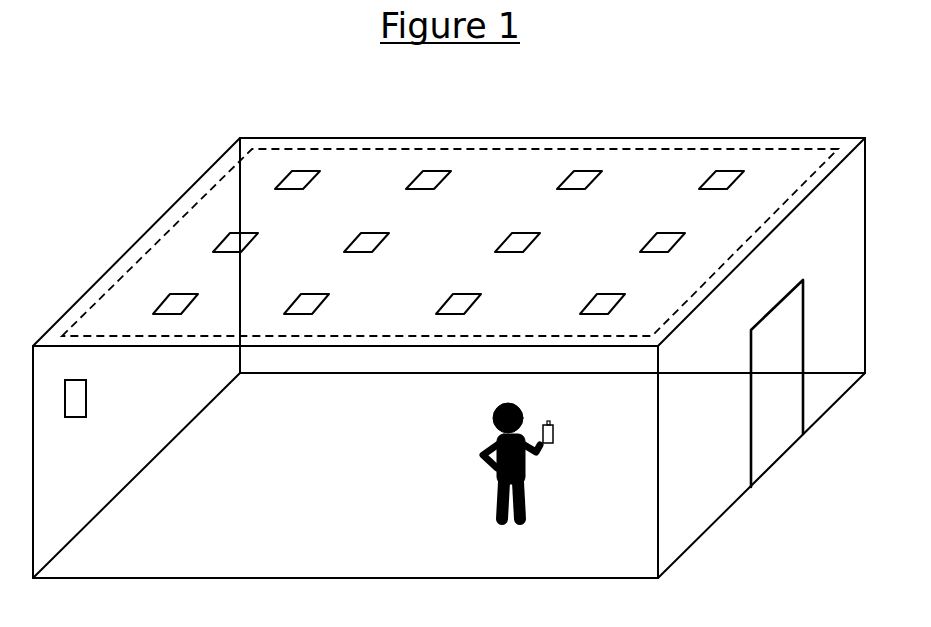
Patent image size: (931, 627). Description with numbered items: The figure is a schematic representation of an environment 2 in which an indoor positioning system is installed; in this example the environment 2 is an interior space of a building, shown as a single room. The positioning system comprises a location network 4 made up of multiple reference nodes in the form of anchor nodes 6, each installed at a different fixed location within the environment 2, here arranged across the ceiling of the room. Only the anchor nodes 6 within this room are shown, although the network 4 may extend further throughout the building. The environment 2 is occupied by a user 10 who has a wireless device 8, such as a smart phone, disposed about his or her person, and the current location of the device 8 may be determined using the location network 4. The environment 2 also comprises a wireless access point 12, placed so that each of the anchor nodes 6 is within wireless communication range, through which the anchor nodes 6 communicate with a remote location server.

The environment 2 is at (701, 137).
The location network 4 is at (548, 149).
The anchor nodes 6 is at (602, 176).
The wireless device 8 is at (553, 435).
The user 10 is at (498, 480).
The wireless access point 12 is at (86, 402).